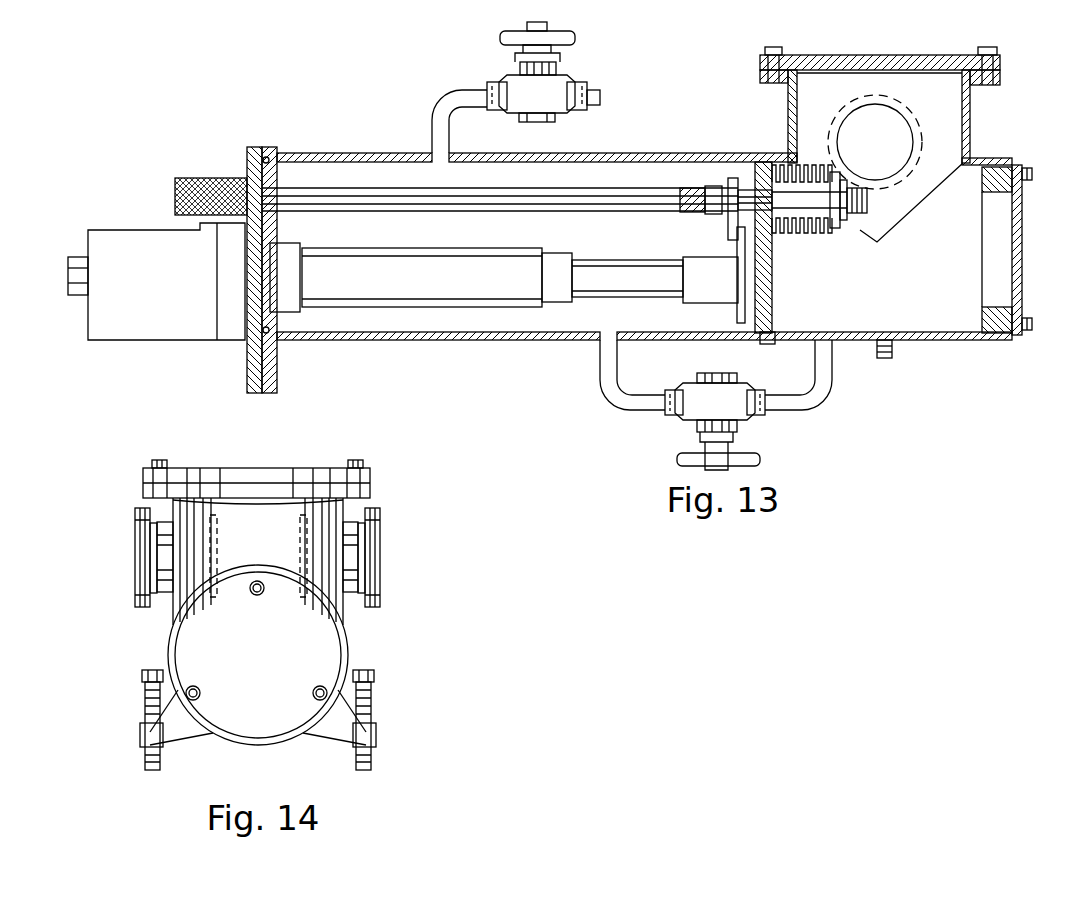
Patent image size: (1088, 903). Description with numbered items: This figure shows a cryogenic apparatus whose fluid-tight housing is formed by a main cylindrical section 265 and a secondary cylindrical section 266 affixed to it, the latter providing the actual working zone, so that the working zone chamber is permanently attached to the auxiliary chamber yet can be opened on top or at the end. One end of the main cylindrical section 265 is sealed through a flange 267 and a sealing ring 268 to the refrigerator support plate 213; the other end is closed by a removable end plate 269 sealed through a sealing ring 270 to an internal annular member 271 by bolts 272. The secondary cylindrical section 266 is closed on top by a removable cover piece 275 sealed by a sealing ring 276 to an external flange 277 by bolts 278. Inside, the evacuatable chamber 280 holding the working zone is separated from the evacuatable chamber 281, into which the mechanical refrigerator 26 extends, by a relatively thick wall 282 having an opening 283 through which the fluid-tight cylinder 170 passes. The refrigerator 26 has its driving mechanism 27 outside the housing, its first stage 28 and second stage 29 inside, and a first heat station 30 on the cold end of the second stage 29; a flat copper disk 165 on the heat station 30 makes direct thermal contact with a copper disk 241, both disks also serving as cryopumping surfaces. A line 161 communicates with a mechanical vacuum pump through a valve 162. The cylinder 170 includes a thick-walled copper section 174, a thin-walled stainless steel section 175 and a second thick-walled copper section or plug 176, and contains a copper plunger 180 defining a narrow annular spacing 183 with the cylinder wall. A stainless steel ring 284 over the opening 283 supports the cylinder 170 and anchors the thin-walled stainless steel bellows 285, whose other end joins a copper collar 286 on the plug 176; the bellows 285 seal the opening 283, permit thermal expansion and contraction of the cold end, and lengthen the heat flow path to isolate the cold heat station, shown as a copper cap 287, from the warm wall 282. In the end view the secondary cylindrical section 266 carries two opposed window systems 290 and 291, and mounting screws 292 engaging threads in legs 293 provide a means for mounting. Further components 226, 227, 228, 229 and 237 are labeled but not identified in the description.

In FIG. 13, the mechanical refrigerator 26 is at (156, 256).
In FIG. 13, the driving mechanism 27 is at (141, 287).
In FIG. 13, the first stage 28 is at (406, 287).
In FIG. 13, the second stage 29 is at (614, 287).
In FIG. 13, the first heat station 30 is at (696, 287).
In FIG. 13, the line 161 is at (440, 115).
In FIG. 13, the valve 162 is at (558, 58).
In FIG. 13, the flat copper disk 165 is at (737, 308).
In FIG. 13, the fluid-tight cylinder 170 is at (372, 186).
In FIG. 13, the thick-walled copper section 174 is at (687, 187).
In FIG. 13, the thin-walled stainless steel section 175 is at (822, 228).
In FIG. 13, the second thick-walled copper section 176 is at (835, 222).
In FIG. 13, the copper plunger 180 is at (736, 183).
In FIG. 13, the narrow annular spacing 183 is at (700, 186).
In FIG. 13, the refrigerator support plate 213 is at (250, 147).
In FIG. 14, the cylindrical housing 226 is at (178, 600).
In FIG. 14, the housing body 227 is at (370, 492).
In FIG. 13, the bypass conduit 228 is at (828, 378).
In FIG. 13, the bypass valve 229 is at (732, 415).
In FIG. 13, the knurled spacer 237 is at (195, 178).
In FIG. 13, the copper disk 241 is at (728, 220).
In FIG. 13, the main cylindrical section 265 is at (497, 341).
In FIG. 13, the secondary cylindrical section 266 is at (970, 115).
In FIG. 13, the flange 267 is at (268, 147).
In FIG. 13, the sealing ring 268 is at (285, 160).
In FIG. 13, the removable end plate 269 is at (1020, 272).
In FIG. 14, the removable end plate 269 is at (330, 655).
In FIG. 13, the sealing ring 270 is at (1027, 318).
In FIG. 13, the internal annular member 271 is at (990, 182).
In FIG. 13, the bolts 272 is at (1030, 172).
In FIG. 14, the bolts 272 is at (318, 700).
In FIG. 13, the removable cover piece 275 is at (880, 55).
In FIG. 14, the removable cover piece 275 is at (372, 480).
In FIG. 13, the sealing ring 276 is at (985, 47).
In FIG. 13, the external flange 277 is at (1000, 76).
In FIG. 13, the bolts 278 is at (770, 50).
In FIG. 14, the bolts 278 is at (360, 460).
In FIG. 13, the evacuatable chamber 280 is at (937, 270).
In FIG. 13, the evacuatable chamber 281 is at (605, 242).
In FIG. 13, the thick wall 282 is at (769, 344).
In FIG. 13, the opening 283 is at (760, 170).
In FIG. 13, the stainless steel ring 284 is at (780, 218).
In FIG. 13, the thin-walled stainless steel bellows 285 is at (812, 168).
In FIG. 13, the copper collar 286 is at (870, 240).
In FIG. 13, the copper cap 287 is at (868, 198).
In FIG. 14, the window system 290 is at (385, 555).
In FIG. 13, the window system 291 is at (860, 142).
In FIG. 14, the window system 291 is at (132, 560).
In FIG. 13, the mounting screws 292 is at (893, 351).
In FIG. 14, the mounting screws 292 is at (368, 702).
In FIG. 14, the legs 293 is at (175, 720).